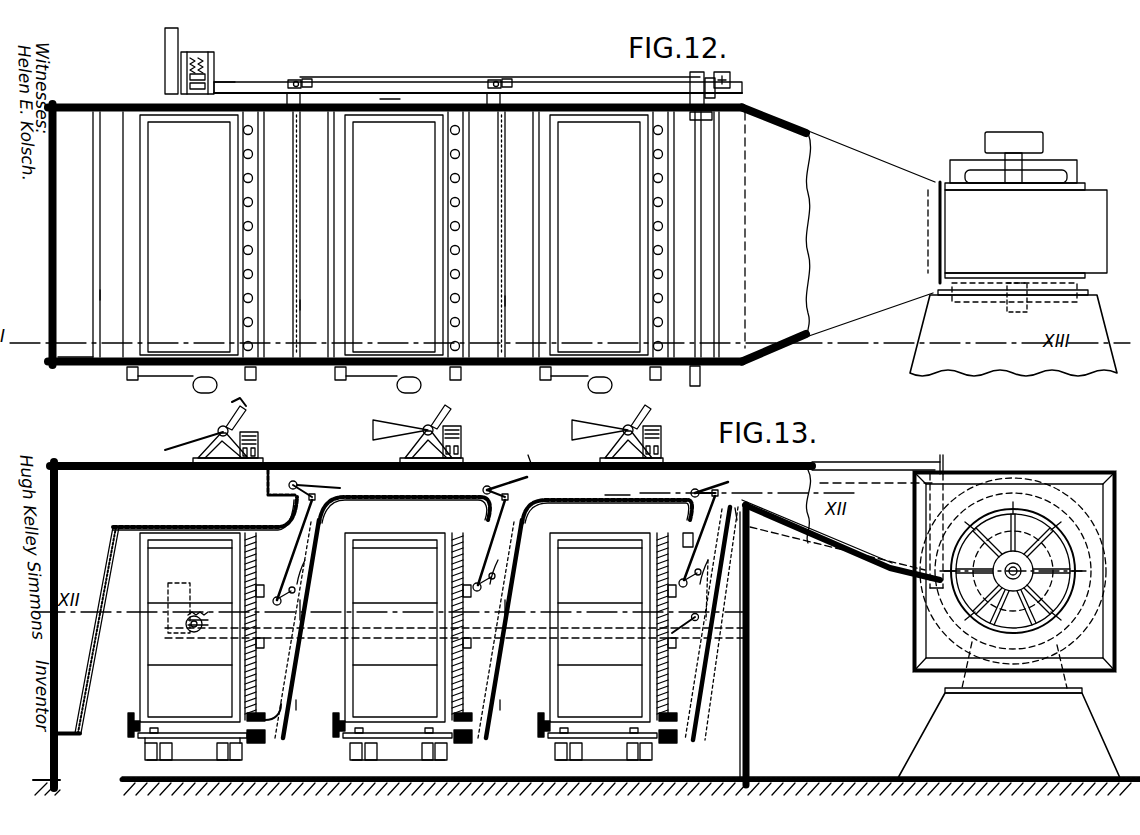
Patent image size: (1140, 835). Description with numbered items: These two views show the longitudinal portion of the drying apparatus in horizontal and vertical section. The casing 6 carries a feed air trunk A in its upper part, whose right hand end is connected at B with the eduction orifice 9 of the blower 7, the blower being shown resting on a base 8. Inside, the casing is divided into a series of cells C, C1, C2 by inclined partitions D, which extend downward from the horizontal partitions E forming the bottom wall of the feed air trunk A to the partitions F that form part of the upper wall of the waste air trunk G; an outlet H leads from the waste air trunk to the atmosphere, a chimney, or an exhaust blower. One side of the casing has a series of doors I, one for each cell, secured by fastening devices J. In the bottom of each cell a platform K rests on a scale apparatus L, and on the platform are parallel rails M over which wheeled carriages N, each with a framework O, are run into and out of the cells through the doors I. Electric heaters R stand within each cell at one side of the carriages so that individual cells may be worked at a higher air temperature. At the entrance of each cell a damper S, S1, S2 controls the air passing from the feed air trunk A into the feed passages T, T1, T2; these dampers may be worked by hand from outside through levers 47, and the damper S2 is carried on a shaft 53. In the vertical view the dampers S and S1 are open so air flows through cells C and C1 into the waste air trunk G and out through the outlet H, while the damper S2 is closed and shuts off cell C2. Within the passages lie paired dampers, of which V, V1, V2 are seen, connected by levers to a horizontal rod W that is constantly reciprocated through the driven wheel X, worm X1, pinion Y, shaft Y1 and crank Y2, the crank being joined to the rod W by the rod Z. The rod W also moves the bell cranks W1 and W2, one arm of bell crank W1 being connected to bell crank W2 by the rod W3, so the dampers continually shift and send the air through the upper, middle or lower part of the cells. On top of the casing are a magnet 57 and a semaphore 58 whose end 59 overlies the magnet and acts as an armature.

In FIG. 12, the casing 6 is at (390, 99).
In FIG. 13, the casing 6 is at (525, 451).
In FIG. 12, the blower 7 is at (1026, 202).
In FIG. 13, the blower 7 is at (1013, 505).
In FIG. 12, the base 8 is at (993, 290).
In FIG. 13, the base 8 is at (972, 587).
In FIG. 12, the eduction orifice 9 is at (920, 232).
In FIG. 13, the eduction orifice 9 is at (905, 555).
In FIG. 12, the levers 47 is at (700, 380).
In FIG. 13, the shaft 53 is at (297, 481).
In FIG. 13, the magnet 57 is at (258, 440).
In FIG. 13, the semaphore 58 is at (578, 450).
In FIG. 12, the semaphore end 59 is at (240, 410).
In FIG. 13, the semaphore end 59 is at (454, 416).
In FIG. 13, the feed air trunk A is at (617, 484).
In FIG. 12, the connection B is at (870, 233).
In FIG. 13, the connection B is at (829, 506).
In FIG. 12, the cell C is at (512, 293).
In FIG. 13, the cell C is at (513, 695).
In FIG. 12, the cell C1 is at (312, 297).
In FIG. 13, the cell C1 is at (313, 695).
In FIG. 12, the cell C2 is at (111, 283).
In FIG. 13, the cell C2 is at (90, 630).
In FIG. 12, the inclined partitions D is at (300, 246).
In FIG. 13, the inclined partitions D is at (300, 660).
In FIG. 13, the horizontal partitions E is at (505, 511).
In FIG. 13, the partitions F is at (462, 739).
In FIG. 13, the waste air trunk G is at (631, 776).
In FIG. 12, the outlet H is at (100, 366).
In FIG. 13, the outlet H is at (57, 792).
In FIG. 12, the doors I is at (185, 377).
In FIG. 12, the fastening devices J is at (138, 382).
In FIG. 13, the platform K is at (182, 743).
In FIG. 13, the scale apparatus L is at (397, 756).
In FIG. 13, the parallel rails M is at (428, 728).
In FIG. 13, the wheeled carriages N is at (374, 717).
In FIG. 12, the framework O is at (140, 212).
In FIG. 13, the framework O is at (140, 593).
In FIG. 12, the electric heaters R is at (252, 180).
In FIG. 13, the electric heaters R is at (656, 630).
In FIG. 13, the damper S is at (711, 482).
In FIG. 13, the damper S1 is at (494, 485).
In FIG. 13, the damper S2 is at (330, 488).
In FIG. 13, the feed passage T is at (735, 520).
In FIG. 13, the feed passage T1 is at (494, 550).
In FIG. 13, the feed passage T2 is at (278, 512).
In FIG. 12, the damper V is at (726, 258).
In FIG. 13, the damper V is at (728, 560).
In FIG. 12, the damper V1 is at (503, 234).
In FIG. 13, the damper V1 is at (527, 590).
In FIG. 12, the damper V2 is at (298, 234).
In FIG. 13, the damper V2 is at (322, 590).
In FIG. 12, the horizontal rod W is at (443, 80).
In FIG. 13, the horizontal rod W is at (455, 627).
In FIG. 12, the bell crank W1 is at (314, 90).
In FIG. 13, the bell crank W1 is at (725, 618).
In FIG. 12, the bell crank W2 is at (730, 90).
In FIG. 13, the bell crank W2 is at (686, 547).
In FIG. 12, the rod W3 is at (300, 78).
In FIG. 13, the rod W3 is at (728, 598).
In FIG. 12, the driven wheel X is at (165, 42).
In FIG. 13, the driven wheel X is at (178, 583).
In FIG. 12, the worm X1 is at (197, 61).
In FIG. 13, the worm X1 is at (201, 602).
In FIG. 13, the pinion Y is at (200, 632).
In FIG. 13, the shaft Y1 is at (190, 632).
In FIG. 12, the crank Y2 is at (214, 74).
In FIG. 13, the crank Y2 is at (186, 620).
In FIG. 12, the rod Z is at (275, 80).
In FIG. 13, the rod Z is at (267, 694).